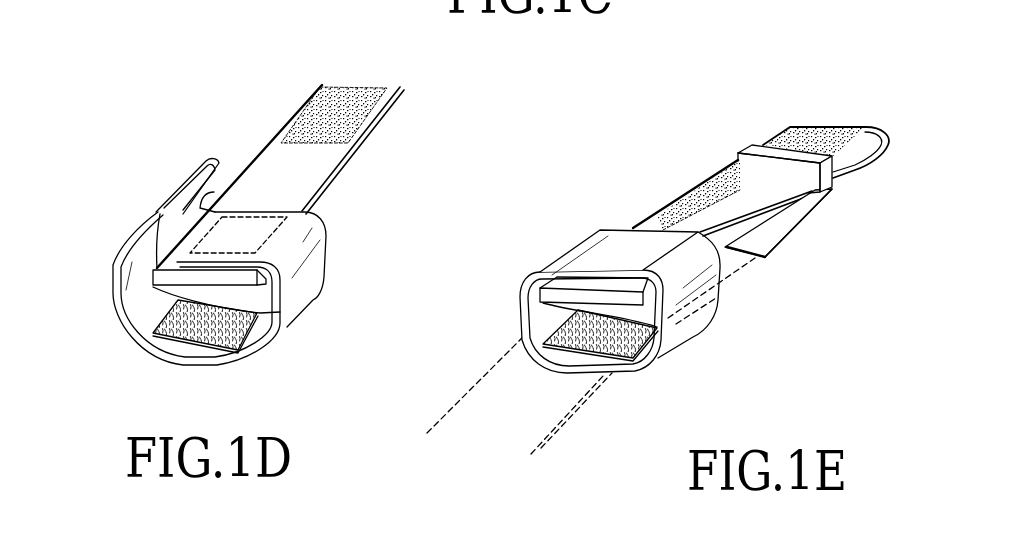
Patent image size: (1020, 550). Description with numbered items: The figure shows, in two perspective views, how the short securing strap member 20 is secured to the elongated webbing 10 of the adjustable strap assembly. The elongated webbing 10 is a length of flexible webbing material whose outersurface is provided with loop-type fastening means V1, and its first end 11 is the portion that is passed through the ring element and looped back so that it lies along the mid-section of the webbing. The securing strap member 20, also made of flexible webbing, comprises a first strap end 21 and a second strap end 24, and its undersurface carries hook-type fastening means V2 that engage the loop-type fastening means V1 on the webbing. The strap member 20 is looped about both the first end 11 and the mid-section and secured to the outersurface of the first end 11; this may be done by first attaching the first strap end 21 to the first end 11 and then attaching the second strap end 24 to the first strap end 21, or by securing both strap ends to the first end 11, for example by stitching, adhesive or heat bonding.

In FIG. 1D, the elongated webbing 10 is at (347, 158).
In FIG. 1E, the elongated webbing 10 is at (646, 210).
In FIG. 1D, the first end 11 is at (178, 308).
In FIG. 1E, the first end 11 is at (578, 312).
In FIG. 1D, the securing strap member 20 is at (324, 270).
In FIG. 1E, the securing strap member 20 is at (697, 340).
In FIG. 1D, the first strap end 21 is at (214, 192).
In FIG. 1D, the second strap end 24 is at (218, 165).
In FIG. 1E, the second strap end 24 is at (730, 250).
In FIG. 1D, the loop-type fastening means V1 is at (321, 103).
In FIG. 1D, the hook-type fastening means V2 is at (173, 338).
In FIG. 1E, the hook-type fastening means V2 is at (575, 360).